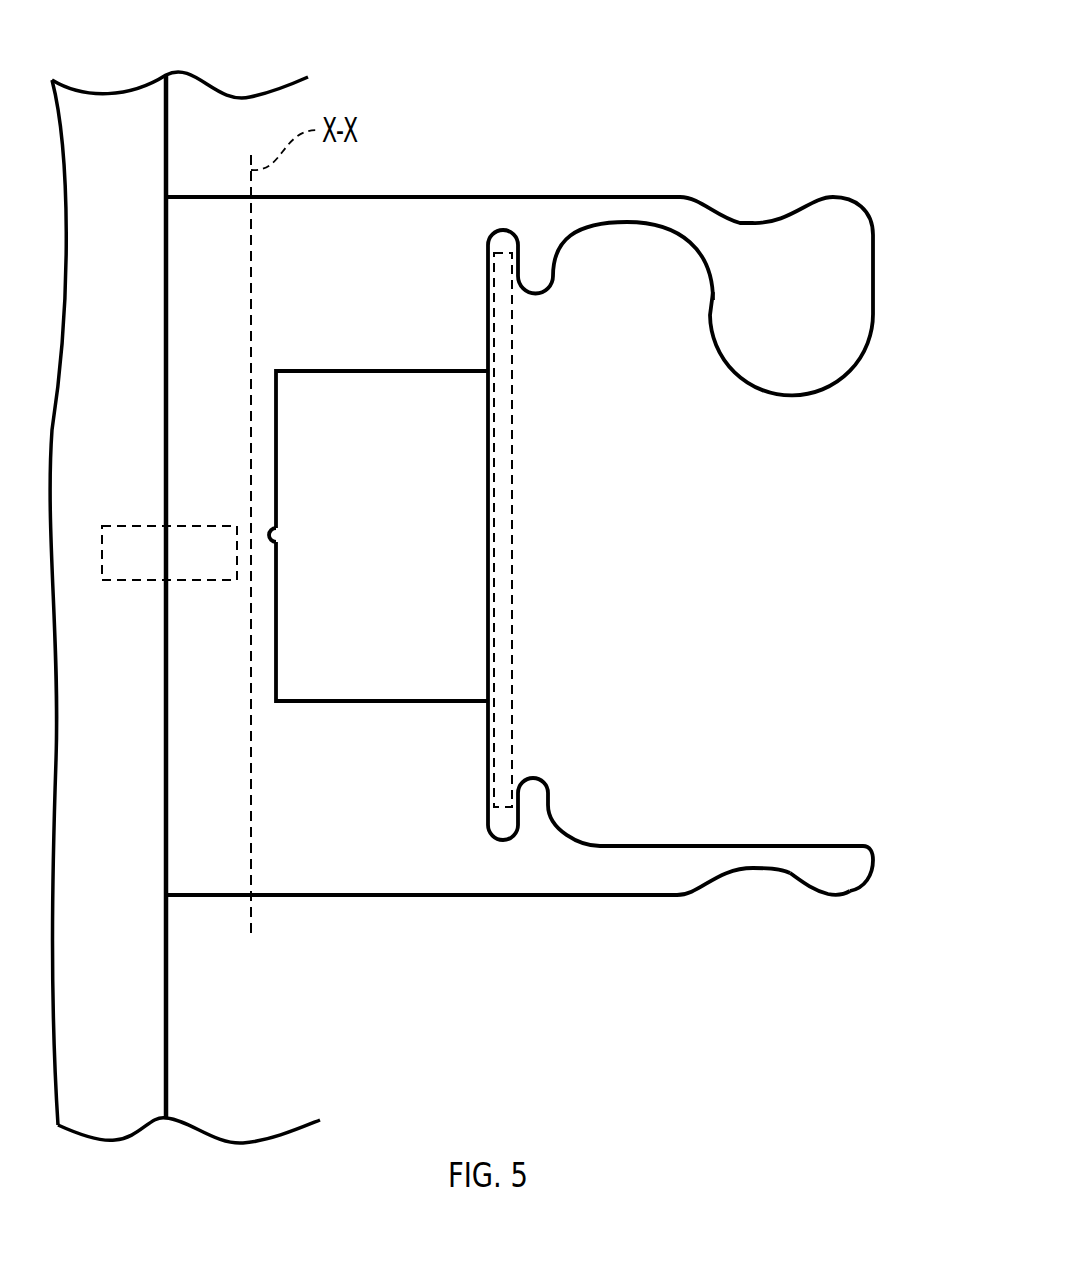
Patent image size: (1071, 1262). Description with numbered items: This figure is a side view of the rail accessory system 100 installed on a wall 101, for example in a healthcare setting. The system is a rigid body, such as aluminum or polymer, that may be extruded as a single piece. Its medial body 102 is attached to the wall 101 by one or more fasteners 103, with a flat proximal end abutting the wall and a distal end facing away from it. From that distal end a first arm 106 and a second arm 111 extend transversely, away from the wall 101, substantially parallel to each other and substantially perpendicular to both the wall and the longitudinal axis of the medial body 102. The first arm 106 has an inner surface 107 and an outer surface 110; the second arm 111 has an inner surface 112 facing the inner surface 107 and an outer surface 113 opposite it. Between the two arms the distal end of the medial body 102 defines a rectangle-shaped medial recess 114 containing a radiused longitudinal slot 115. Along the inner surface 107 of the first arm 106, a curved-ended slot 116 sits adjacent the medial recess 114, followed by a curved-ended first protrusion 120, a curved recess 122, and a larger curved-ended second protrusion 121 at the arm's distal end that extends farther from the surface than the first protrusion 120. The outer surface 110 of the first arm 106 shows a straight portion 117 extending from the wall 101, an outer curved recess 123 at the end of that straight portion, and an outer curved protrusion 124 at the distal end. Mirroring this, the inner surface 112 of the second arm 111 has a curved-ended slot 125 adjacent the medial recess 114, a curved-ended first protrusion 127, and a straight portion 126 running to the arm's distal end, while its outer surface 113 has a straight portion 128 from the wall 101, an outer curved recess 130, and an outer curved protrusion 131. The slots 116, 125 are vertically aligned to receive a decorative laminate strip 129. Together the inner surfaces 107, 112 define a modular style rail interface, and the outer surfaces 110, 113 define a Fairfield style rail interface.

The rail accessory system 100 is at (846, 92).
The wall 101 is at (130, 152).
The medial body 102 is at (225, 410).
The fastener 103 is at (197, 526).
The first arm 106 is at (853, 230).
The inner surface 107 is at (610, 400).
The outer surface 110 is at (517, 163).
The second arm 111 is at (858, 840).
The inner surface 112 is at (597, 730).
The outer surface 113 is at (543, 933).
The medial recess 114 is at (401, 551).
The radiused longitudinal slot 115 is at (277, 535).
The slot 116 is at (492, 240).
The straight portion 117 is at (392, 197).
The first protrusion 120 is at (540, 253).
The second protrusion 121 is at (790, 355).
The curved recess 122 is at (646, 281).
The outer curved recess 123 is at (768, 215).
The outer curved protrusion 124 is at (835, 197).
The slot 125 is at (490, 823).
The straight portion 126 is at (700, 846).
The first protrusion 127 is at (533, 808).
The straight portion 128 is at (277, 895).
The decorative laminate strip 129 is at (512, 588).
The outer curved recess 130 is at (753, 883).
The outer curved protrusion 131 is at (833, 890).